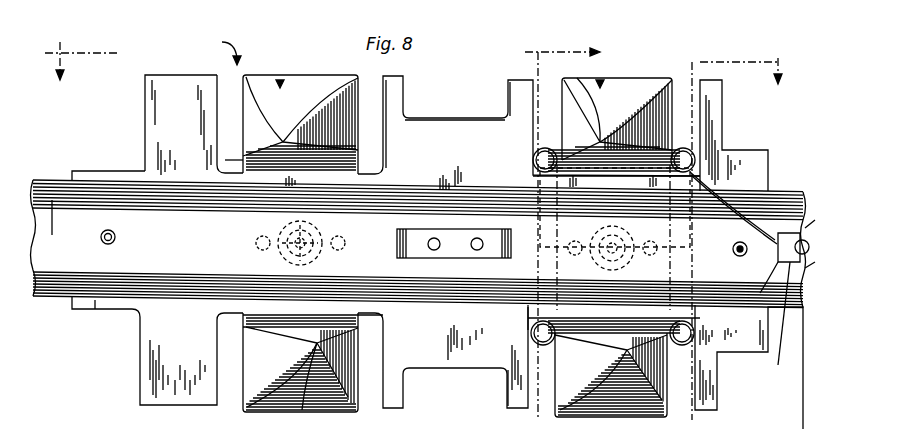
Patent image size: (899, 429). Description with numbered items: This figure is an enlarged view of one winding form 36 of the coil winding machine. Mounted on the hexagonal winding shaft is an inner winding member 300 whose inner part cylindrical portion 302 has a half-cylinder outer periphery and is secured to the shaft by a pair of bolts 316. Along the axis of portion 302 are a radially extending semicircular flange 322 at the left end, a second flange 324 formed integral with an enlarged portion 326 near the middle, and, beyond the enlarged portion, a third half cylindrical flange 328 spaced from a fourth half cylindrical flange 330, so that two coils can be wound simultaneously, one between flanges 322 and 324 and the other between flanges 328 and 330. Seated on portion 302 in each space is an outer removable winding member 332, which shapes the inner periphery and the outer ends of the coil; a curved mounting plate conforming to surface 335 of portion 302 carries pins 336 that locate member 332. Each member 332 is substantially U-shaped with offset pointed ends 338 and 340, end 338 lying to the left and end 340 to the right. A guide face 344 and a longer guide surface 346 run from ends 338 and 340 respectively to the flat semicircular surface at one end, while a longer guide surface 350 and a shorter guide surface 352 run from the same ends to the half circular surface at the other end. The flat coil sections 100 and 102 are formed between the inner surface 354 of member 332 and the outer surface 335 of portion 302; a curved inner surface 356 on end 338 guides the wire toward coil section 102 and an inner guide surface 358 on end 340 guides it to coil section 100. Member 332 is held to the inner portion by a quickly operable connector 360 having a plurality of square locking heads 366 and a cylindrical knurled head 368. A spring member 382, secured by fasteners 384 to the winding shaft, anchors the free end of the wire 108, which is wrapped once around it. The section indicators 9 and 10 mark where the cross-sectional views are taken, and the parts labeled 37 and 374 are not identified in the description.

The section line 9- 9 is at (414, 54).
The section line 10- 10 is at (604, 235).
The winding form 36 is at (215, 48).
The wall 37 is at (52, 205).
The coil section 100 is at (540, 324).
The coil section 102 is at (567, 168).
The wire 108 is at (772, 190).
The inner winding member 300 is at (448, 172).
The inner part cylindrical portion 302 is at (95, 306).
The bolts 316 is at (118, 232).
The semicircular flange 322 is at (158, 105).
The second flange 324 is at (400, 86).
The enlarged portion 326 is at (455, 150).
The third half cylindrical flange 328 is at (515, 80).
The fourth half cylindrical flange 330 is at (712, 95).
The outer removable winding member 332 is at (280, 82).
The surface 335 is at (233, 163).
The pins 336 is at (258, 238).
The pointed end 338 is at (290, 125).
The pointed end 340 is at (302, 378).
The guide face 344 is at (258, 122).
The guide surface 346 is at (260, 365).
The guide surface 350 is at (325, 118).
The guide surface 352 is at (340, 355).
The inner surface 354 is at (245, 326).
The curved inner surface 356 is at (600, 166).
The inner guide surface 358 is at (318, 332).
The connector 360 is at (624, 392).
The locking heads 366 is at (322, 236).
The knurled head 368 is at (611, 417).
The hidden shaft 374 is at (280, 255).
The spring member 382 is at (400, 245).
The fasteners 384 is at (478, 246).